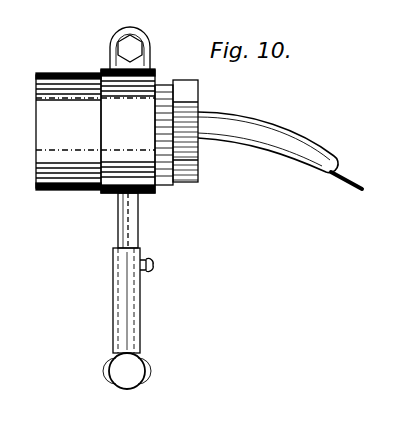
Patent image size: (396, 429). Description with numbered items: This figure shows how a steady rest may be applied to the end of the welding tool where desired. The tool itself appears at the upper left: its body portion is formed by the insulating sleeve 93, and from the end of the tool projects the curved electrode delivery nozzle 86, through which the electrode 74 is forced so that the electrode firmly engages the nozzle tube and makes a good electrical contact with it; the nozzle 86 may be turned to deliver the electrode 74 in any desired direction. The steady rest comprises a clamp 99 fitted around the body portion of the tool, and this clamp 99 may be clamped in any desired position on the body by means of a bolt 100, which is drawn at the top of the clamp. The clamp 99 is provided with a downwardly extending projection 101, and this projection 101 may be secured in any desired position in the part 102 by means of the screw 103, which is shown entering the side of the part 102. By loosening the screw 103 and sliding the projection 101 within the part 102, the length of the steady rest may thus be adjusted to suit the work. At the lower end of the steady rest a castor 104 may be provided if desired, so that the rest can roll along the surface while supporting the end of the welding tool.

The electrode 74 is at (353, 177).
The nozzle 86 is at (297, 143).
The insulating sleeve 93 is at (63, 78).
The clamp 99 is at (93, 185).
The bolt 100 is at (145, 37).
The projection 101 is at (132, 225).
The part 102 is at (132, 330).
The screw 103 is at (153, 268).
The castor 104 is at (135, 385).